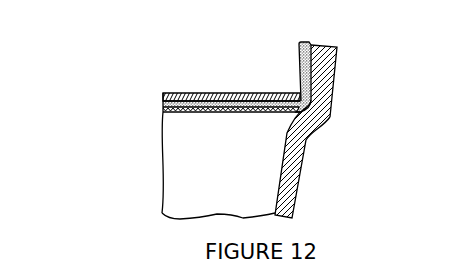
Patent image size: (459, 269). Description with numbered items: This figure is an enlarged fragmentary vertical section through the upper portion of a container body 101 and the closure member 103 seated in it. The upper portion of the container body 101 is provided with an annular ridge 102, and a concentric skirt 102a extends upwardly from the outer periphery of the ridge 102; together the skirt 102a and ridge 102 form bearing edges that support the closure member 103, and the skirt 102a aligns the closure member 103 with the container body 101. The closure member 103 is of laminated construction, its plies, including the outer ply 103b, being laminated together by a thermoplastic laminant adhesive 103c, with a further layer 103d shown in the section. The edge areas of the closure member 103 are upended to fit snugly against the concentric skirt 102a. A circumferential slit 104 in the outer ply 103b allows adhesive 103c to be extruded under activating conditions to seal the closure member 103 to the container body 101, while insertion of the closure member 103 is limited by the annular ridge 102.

The container body 101 is at (303, 157).
The annular ridge 102 is at (294, 113).
The concentric skirt 102a is at (338, 48).
The closure member 103 is at (190, 92).
The outer ply 103b is at (163, 109).
The thermoplastic laminant adhesive 103c is at (163, 101).
The third coating layer 103d is at (163, 93).
The circumferential slit 104 is at (322, 69).